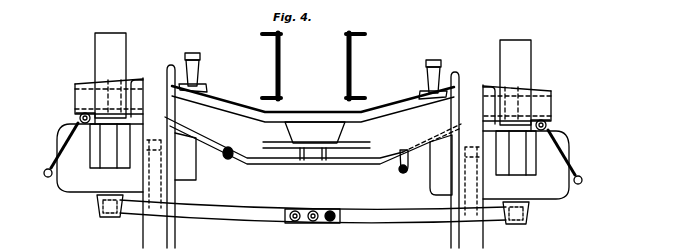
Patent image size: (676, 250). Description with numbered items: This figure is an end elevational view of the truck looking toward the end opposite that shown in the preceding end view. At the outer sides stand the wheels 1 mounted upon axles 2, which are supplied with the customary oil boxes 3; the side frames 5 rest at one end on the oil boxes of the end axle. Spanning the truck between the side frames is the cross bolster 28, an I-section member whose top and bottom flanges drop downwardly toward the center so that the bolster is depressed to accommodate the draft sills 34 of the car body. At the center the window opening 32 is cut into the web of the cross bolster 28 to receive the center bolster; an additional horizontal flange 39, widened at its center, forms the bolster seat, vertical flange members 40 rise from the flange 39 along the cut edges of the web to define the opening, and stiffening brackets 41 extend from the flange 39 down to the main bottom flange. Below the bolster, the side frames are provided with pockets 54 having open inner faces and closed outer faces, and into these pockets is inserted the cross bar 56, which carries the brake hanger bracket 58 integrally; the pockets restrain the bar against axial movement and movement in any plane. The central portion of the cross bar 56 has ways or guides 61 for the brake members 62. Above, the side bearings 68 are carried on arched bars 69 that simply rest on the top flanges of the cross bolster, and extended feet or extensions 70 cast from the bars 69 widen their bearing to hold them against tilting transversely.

The wheels 1 is at (162, 228).
The axles 2 is at (230, 160).
The oil boxes 3 is at (80, 188).
The side frames 5 is at (103, 33).
The cross bolster 28 is at (348, 122).
The window opening 32 is at (303, 130).
The draft sills 34 is at (347, 48).
The horizontal flange 39 is at (345, 143).
The vertical flange members 40 is at (283, 132).
The stiffening brackets 41 is at (320, 157).
The pockets 54 is at (100, 214).
The cross bar 56 is at (243, 210).
The brake hanger bracket 58 is at (143, 212).
The ways or guides 61 is at (317, 223).
The brake members 62 is at (322, 209).
The side bearings 68 is at (198, 53).
The bars 69 is at (200, 72).
The extensions 70 is at (204, 79).